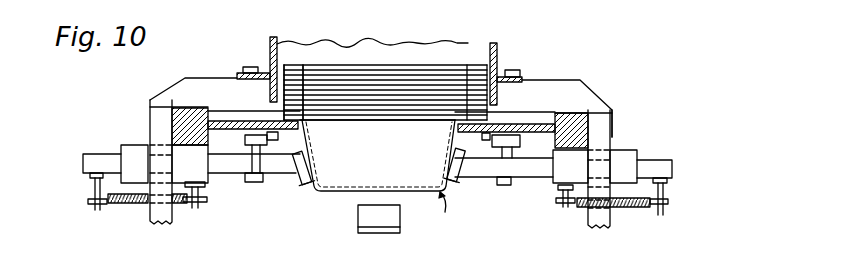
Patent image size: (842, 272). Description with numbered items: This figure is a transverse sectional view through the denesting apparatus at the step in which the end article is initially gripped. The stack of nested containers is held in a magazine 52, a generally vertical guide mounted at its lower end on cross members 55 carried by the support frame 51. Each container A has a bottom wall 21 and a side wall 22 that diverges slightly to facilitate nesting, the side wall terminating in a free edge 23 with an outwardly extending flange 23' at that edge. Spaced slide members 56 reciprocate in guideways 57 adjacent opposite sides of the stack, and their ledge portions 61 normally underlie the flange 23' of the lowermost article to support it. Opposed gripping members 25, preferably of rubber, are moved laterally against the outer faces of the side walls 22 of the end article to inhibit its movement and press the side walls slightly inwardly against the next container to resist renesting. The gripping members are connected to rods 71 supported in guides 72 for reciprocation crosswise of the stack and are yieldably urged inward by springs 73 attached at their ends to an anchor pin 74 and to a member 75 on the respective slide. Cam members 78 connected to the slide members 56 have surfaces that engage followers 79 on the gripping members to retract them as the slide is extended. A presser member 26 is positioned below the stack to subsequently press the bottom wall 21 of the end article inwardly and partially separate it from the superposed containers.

The bottom wall 21 is at (333, 198).
The side wall 22 is at (300, 186).
The free edge 23 is at (385, 69).
The flange 23' is at (307, 67).
The gripping members 25 is at (466, 186).
The presser member 26 is at (385, 234).
The support frame 51 is at (603, 133).
The magazine 52 is at (497, 45).
The cross members 55 is at (578, 92).
The slide members 56 is at (532, 125).
The guideways 57 is at (612, 118).
The ledge portions 61 is at (275, 112).
The rods 71 is at (108, 158).
The guides 72 is at (133, 148).
The springs 73 is at (130, 205).
The anchor pin 74 is at (197, 208).
The member 75 is at (93, 208).
The cam members 78 is at (278, 142).
The followers 79 is at (245, 137).
The container A is at (439, 214).